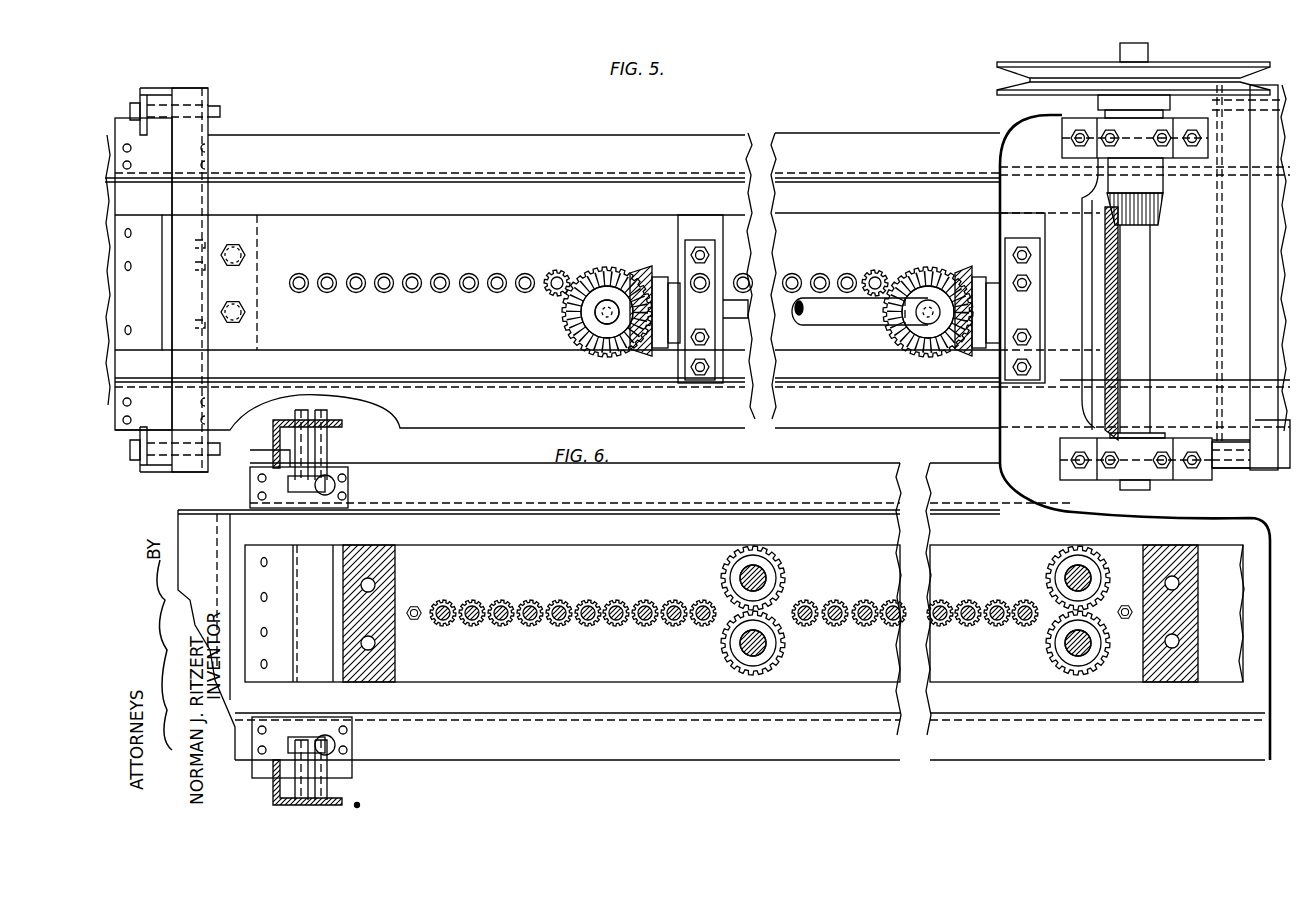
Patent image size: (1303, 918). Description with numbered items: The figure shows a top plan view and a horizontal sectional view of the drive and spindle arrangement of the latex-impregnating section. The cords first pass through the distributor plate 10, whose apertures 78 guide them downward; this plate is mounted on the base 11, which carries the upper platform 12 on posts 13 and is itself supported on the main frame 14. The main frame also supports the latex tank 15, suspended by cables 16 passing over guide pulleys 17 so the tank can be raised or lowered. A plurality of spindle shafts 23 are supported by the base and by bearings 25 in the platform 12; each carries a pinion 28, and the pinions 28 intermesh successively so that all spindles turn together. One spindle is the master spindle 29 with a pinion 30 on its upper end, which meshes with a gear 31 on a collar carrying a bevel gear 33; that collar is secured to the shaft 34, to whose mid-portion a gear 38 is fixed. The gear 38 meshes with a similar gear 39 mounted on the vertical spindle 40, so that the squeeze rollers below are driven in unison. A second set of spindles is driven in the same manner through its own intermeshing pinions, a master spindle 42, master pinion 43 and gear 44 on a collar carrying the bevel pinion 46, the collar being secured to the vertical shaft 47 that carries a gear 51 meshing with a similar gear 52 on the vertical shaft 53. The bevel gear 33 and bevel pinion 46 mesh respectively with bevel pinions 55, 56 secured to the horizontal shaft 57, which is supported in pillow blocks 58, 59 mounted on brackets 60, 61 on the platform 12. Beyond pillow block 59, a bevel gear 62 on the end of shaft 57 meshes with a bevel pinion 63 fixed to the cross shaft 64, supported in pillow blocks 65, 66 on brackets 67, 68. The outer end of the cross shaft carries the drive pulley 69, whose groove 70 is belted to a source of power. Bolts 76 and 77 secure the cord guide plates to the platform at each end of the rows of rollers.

In FIG. 5, the distributor plate 10 is at (154, 344).
In FIG. 6, the distributor plate 10 is at (280, 670).
In FIG. 6, the base 11 is at (475, 528).
In FIG. 5, the upper platform 12 is at (419, 342).
In FIG. 6, the posts 13 is at (392, 570).
In FIG. 5, the main frame 14 is at (205, 88).
In FIG. 6, the main frame 14 is at (301, 614).
In FIG. 5, the latex tank 15 is at (525, 180).
In FIG. 6, the latex tank 15 is at (622, 515).
In FIG. 6, the cables 16 is at (275, 478).
In FIG. 6, the guide pulleys 17 is at (293, 492).
In FIG. 5, the spindle shafts 23 is at (470, 274).
In FIG. 6, the spindle shafts 23 is at (583, 600).
In FIG. 5, the bearings 25 is at (385, 274).
In FIG. 6, the pinion 28 is at (499, 600).
In FIG. 5, the master spindle 29 is at (603, 270).
In FIG. 6, the master spindle 29 is at (700, 622).
In FIG. 5, the pinion 30 is at (557, 270).
In FIG. 5, the gear 31 is at (608, 266).
In FIG. 5, the bevel gear 33 is at (582, 314).
In FIG. 5, the shaft 34 is at (598, 318).
In FIG. 6, the shaft 34 is at (762, 648).
In FIG. 6, the gear 38 is at (787, 640).
In FIG. 6, the gear 39 is at (725, 557).
In FIG. 6, the vertical spindle 40 is at (740, 578).
In FIG. 5, the master spindle 42 is at (882, 270).
In FIG. 5, the master pinion 43 is at (875, 270).
In FIG. 6, the master pinion 43 is at (1024, 600).
In FIG. 5, the gear 44 is at (930, 266).
In FIG. 5, the bevel pinion 46 is at (918, 352).
In FIG. 6, the vertical shaft 47 is at (1088, 648).
In FIG. 6, the gear 51 is at (1050, 660).
In FIG. 6, the gear 52 is at (1055, 560).
In FIG. 6, the vertical shaft 53 is at (1087, 575).
In FIG. 5, the bevel pinion 55 is at (644, 268).
In FIG. 5, the bevel pinion 56 is at (966, 255).
In FIG. 5, the horizontal shaft 57 is at (858, 318).
In FIG. 5, the pillow block 58 is at (716, 258).
In FIG. 5, the pillow block 59 is at (1040, 260).
In FIG. 5, the bracket 60 is at (718, 235).
In FIG. 5, the bracket 61 is at (1038, 232).
In FIG. 5, the bevel gear 62 is at (1120, 298).
In FIG. 5, the bevel pinion 63 is at (1160, 210).
In FIG. 5, the cross shaft 64 is at (1152, 268).
In FIG. 5, the pillow block 65 is at (1092, 118).
In FIG. 5, the pillow block 66 is at (1150, 475).
In FIG. 5, the bracket 67 is at (1040, 118).
In FIG. 5, the bracket 68 is at (1208, 482).
In FIG. 5, the drive pulley 69 is at (1040, 62).
In FIG. 5, the groove 70 is at (1000, 82).
In FIG. 6, the bolt 76 is at (414, 622).
In FIG. 6, the bolt 77 is at (1125, 602).
In FIG. 5, the apertures 78 is at (132, 308).
In FIG. 6, the apertures 78 is at (272, 560).